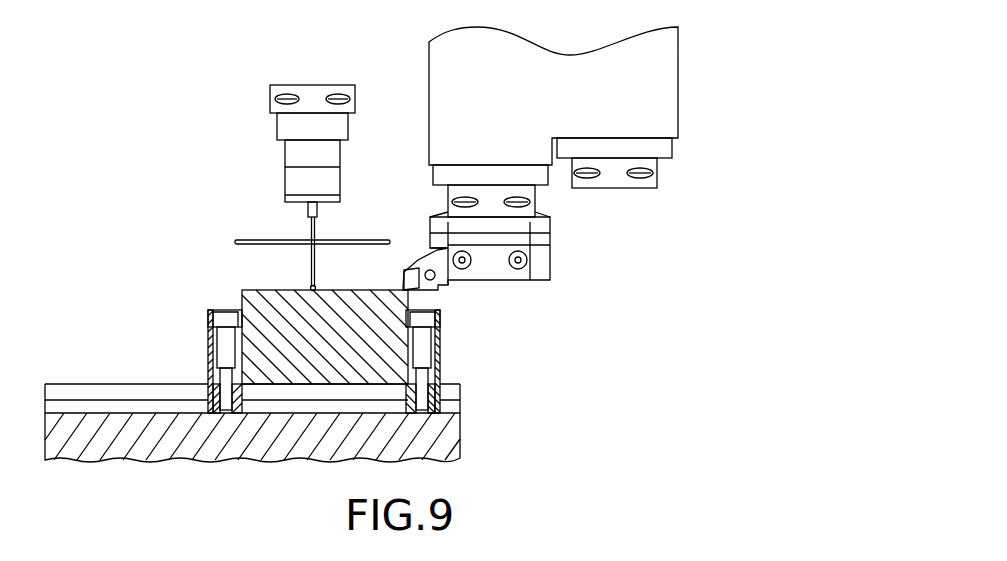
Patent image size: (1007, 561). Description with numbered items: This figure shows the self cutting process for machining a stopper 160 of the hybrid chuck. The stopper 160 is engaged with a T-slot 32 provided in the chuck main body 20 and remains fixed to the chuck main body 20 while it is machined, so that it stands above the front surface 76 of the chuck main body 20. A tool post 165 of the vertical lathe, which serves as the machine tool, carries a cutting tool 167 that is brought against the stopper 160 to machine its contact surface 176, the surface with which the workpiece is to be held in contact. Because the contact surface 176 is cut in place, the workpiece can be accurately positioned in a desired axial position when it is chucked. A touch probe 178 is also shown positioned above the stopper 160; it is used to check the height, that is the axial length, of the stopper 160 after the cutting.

The chuck main body 20 is at (450, 442).
The T-slot 32 is at (92, 407).
The front surface 76 is at (130, 383).
The stopper 160 is at (243, 290).
The tool post 165 is at (518, 236).
The cutting tool 167 is at (410, 256).
The contact surface 176 is at (267, 288).
The touch probe 178 is at (292, 178).